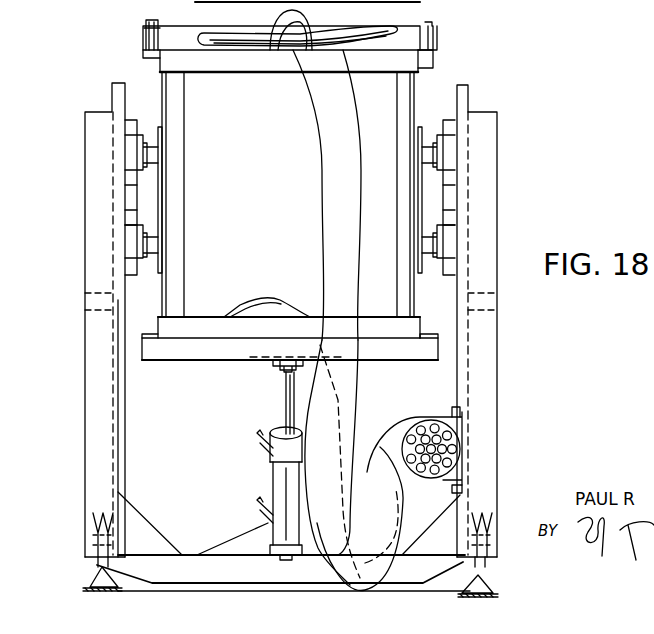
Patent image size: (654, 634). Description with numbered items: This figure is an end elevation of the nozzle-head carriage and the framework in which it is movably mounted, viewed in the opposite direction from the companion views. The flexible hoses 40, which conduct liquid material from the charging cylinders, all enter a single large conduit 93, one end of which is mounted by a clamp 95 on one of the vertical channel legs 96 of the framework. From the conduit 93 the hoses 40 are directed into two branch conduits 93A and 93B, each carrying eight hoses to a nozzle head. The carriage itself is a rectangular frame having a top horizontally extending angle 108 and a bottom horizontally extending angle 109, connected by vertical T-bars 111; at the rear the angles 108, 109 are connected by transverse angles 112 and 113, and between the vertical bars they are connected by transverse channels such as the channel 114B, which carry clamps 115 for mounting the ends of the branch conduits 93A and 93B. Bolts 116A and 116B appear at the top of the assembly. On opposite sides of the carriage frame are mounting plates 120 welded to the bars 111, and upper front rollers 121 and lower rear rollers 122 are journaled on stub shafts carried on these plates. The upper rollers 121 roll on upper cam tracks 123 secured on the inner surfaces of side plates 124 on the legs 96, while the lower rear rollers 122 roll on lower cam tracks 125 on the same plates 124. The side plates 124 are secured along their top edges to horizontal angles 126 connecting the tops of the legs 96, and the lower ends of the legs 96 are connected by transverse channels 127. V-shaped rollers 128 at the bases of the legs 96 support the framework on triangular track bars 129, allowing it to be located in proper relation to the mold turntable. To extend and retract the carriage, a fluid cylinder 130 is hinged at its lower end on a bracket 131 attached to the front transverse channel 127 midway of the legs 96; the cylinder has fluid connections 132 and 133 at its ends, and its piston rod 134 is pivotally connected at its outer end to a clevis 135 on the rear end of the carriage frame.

The flexible hoses 40 is at (343, 40).
The conduit 93 is at (458, 472).
The branch conduit 93A is at (330, 122).
The branch conduit 93B is at (333, 410).
The clamp 95 is at (461, 412).
The legs 96 is at (95, 407).
The top horizontal angle 108 is at (152, 58).
The bottom horizontal angle 109 is at (143, 360).
The vertical T-bar 111 is at (172, 196).
The transverse angle 112 is at (210, 63).
The transverse angle 113 is at (183, 330).
The transverse channel 114B is at (212, 345).
The clamp 115 is at (278, 20).
The bolt 116A is at (146, 34).
The bolt 116B is at (146, 46).
The mounting plate 120 is at (158, 212).
The upper front roller 121 is at (130, 154).
The lower rear roller 122 is at (132, 248).
The upper cam track 123 is at (133, 126).
The side plate 124 is at (118, 293).
The lower cam track 125 is at (130, 220).
The horizontal angle 126 is at (112, 108).
The transverse channel 127 is at (150, 556).
The V-shaped roller 128 is at (96, 565).
The triangular track bar 129 is at (90, 588).
The fluid cylinder 130 is at (285, 475).
The bracket 131 is at (233, 547).
The fluid connection 132 is at (256, 505).
The fluid connection 133 is at (255, 440).
The piston rod 134 is at (284, 405).
The clevis 135 is at (277, 346).